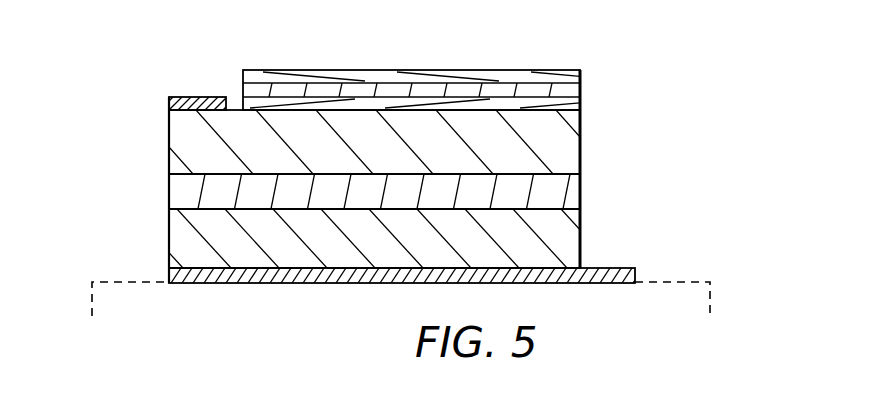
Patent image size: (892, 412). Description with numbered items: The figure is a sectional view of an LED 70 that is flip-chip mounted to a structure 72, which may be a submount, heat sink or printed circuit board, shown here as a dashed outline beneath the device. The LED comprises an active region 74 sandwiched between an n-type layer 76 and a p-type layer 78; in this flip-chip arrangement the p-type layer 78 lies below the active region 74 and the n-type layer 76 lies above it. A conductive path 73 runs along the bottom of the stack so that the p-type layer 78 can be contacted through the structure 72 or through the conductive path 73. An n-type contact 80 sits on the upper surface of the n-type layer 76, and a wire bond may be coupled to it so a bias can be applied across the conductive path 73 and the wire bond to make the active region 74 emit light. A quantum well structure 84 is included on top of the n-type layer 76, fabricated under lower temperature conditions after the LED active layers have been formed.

The LED 70 is at (122, 80).
The structure 72 is at (712, 298).
The conductive path 73 is at (169, 272).
The active region 74 is at (169, 196).
The n-type layer 76 is at (169, 146).
The p-type layer 78 is at (169, 240).
The n-type contact 80 is at (197, 97).
The quantum well structure 84 is at (515, 70).